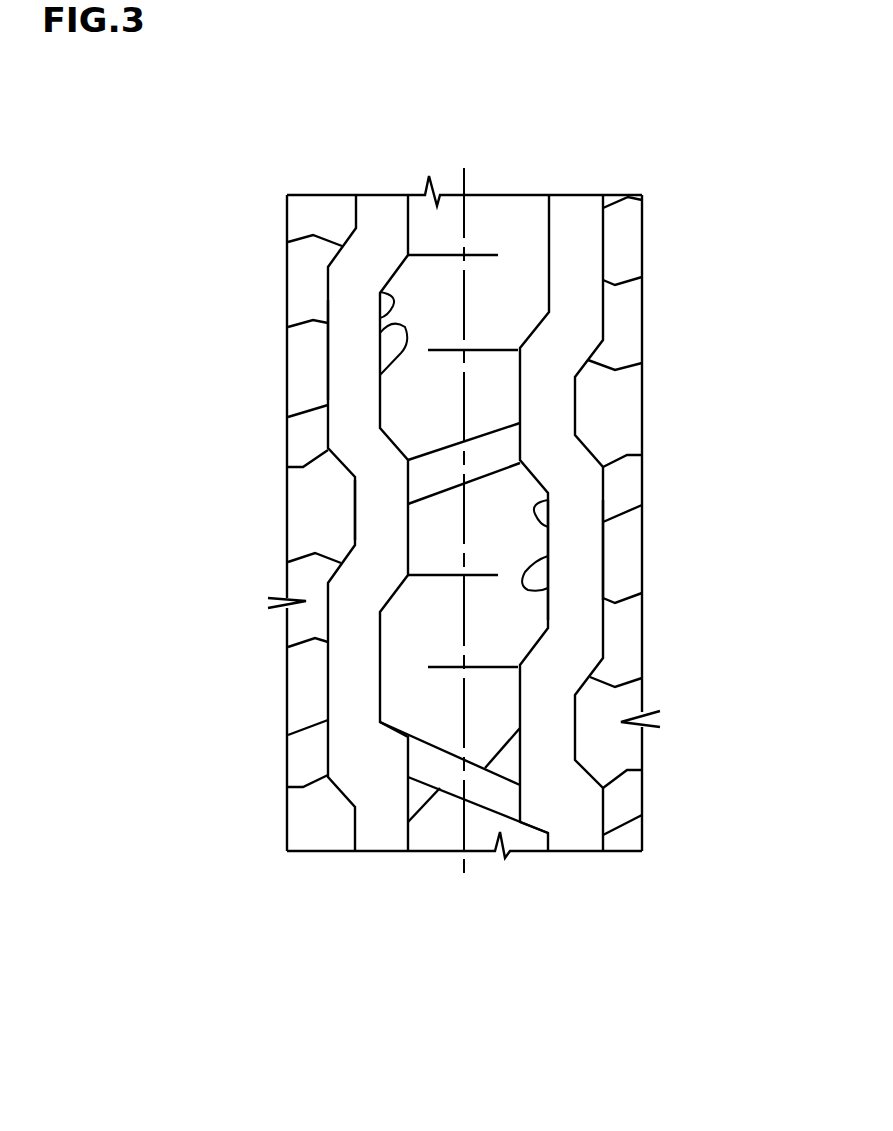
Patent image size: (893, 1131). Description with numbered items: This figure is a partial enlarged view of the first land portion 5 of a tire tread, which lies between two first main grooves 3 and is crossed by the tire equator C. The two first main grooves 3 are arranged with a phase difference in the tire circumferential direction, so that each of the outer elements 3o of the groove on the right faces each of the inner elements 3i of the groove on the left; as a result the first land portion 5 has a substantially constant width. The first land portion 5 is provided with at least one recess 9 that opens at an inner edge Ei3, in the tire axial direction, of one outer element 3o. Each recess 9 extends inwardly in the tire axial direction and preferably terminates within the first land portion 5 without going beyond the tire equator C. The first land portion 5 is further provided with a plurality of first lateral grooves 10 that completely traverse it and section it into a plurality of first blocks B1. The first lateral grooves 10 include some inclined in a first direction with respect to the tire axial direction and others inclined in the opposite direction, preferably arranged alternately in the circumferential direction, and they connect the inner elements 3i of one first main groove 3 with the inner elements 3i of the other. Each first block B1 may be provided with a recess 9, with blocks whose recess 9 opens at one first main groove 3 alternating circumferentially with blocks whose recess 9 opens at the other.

The first main groove 3 is at (380, 222).
The first land portion 5 is at (510, 222).
The tire equator C is at (464, 506).
The outer element 3o is at (350, 350).
The inner element 3i is at (370, 525).
The inner edge Ei3 is at (385, 292).
The recess 9 is at (398, 342).
The first lateral groove 10 is at (432, 450).
The first block B1 is at (511, 409).